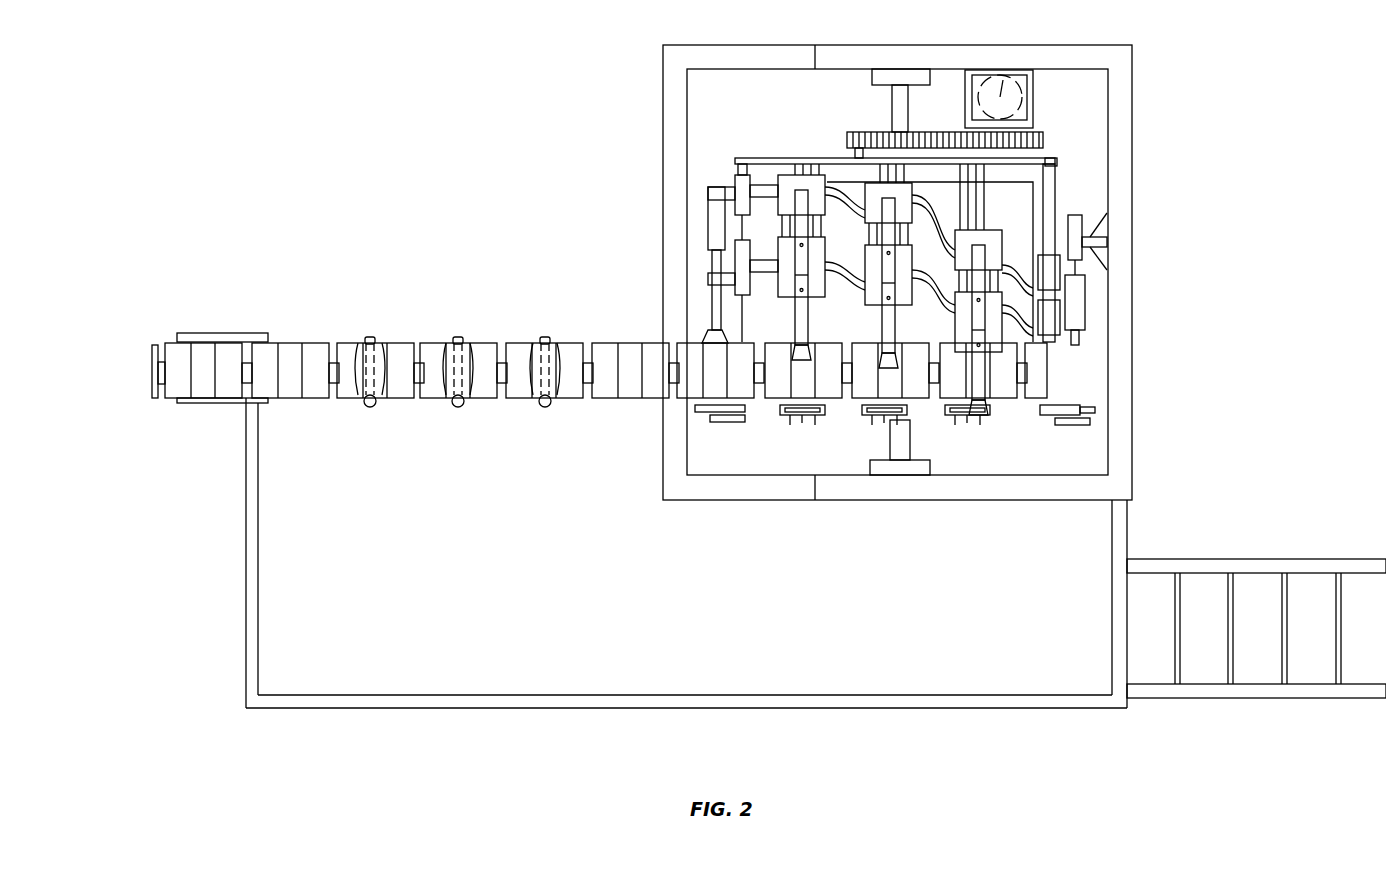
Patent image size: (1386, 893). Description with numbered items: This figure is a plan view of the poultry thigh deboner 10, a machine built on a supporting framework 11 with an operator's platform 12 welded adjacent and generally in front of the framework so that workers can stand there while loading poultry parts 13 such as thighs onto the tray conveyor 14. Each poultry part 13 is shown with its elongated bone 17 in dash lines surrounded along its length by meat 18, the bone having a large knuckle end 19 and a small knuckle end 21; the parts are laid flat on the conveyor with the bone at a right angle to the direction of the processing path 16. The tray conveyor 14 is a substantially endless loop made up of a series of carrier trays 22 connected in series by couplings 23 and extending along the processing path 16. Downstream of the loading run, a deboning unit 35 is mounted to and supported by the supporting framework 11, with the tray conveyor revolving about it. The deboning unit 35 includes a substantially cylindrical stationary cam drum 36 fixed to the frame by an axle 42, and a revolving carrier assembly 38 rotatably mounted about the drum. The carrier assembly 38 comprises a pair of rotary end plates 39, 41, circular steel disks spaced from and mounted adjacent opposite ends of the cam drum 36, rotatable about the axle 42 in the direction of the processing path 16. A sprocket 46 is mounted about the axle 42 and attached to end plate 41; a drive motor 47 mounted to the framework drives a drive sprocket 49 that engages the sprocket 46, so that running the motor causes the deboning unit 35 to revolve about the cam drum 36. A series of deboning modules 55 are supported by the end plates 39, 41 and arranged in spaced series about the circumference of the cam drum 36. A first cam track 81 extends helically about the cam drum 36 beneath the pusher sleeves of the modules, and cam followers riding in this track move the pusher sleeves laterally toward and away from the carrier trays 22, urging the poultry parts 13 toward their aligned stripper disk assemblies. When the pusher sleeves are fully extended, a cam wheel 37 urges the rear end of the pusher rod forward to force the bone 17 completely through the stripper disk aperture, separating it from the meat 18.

The poultry thigh deboner 10 is at (1172, 132).
The supporting framework 11 is at (838, 58).
The operator's platform 12 is at (393, 703).
The poultry parts 13 is at (376, 338).
The tray conveyor 14 is at (428, 400).
The processing path 16 is at (146, 365).
The bone 17 is at (546, 407).
The meat 18 is at (555, 362).
The large knuckle end 19 is at (458, 338).
The small knuckle end 21 is at (372, 405).
The carrier trays 22 is at (683, 385).
The couplings 23 is at (590, 380).
The deboning unit 35 is at (1092, 305).
The cam drum 36 is at (1018, 200).
The cam wheel 37 is at (1107, 206).
The carrier assembly 38 is at (766, 156).
The rotary end plate 39 is at (1030, 166).
The rotary end plate 41 is at (838, 162).
The axle 42 is at (900, 426).
The sprocket 46 is at (856, 130).
The drive motor 47 is at (1000, 70).
The drive sprocket 49 is at (1040, 140).
The deboning modules 55 is at (704, 226).
The first cam track 81 is at (848, 270).